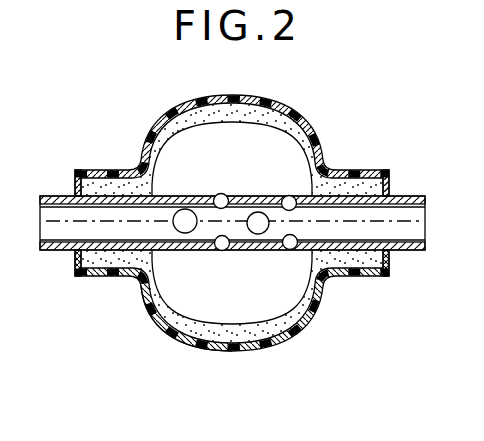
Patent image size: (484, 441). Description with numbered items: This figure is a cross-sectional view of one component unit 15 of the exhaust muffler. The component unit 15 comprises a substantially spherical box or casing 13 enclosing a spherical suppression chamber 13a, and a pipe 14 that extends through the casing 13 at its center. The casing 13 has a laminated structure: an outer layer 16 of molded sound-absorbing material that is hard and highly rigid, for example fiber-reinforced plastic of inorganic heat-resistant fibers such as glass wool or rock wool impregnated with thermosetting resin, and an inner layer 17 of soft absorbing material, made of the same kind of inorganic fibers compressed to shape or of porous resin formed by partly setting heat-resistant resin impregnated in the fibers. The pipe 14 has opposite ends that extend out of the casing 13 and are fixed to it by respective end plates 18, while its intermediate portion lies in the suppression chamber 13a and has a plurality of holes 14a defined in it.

The casing 13 is at (232, 333).
The suppression chamber 13a is at (173, 327).
The pipe 14 is at (405, 196).
The holes 14a is at (287, 198).
The component unit 15 is at (339, 117).
The outer layer 16 is at (292, 337).
The inner layer 17 is at (302, 297).
The end plates 18 is at (72, 264).